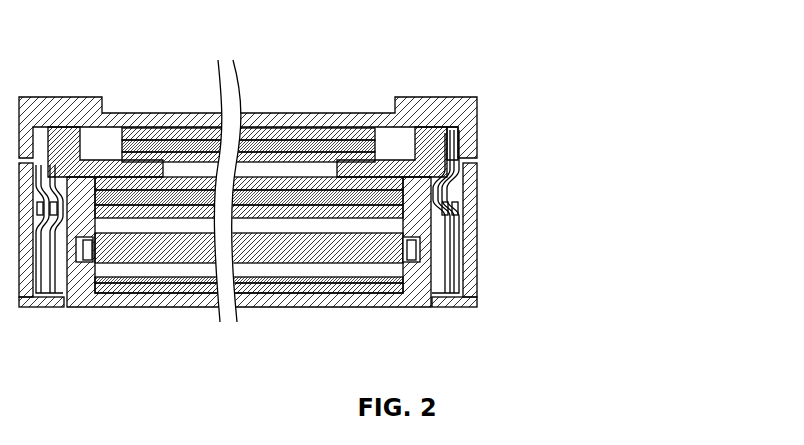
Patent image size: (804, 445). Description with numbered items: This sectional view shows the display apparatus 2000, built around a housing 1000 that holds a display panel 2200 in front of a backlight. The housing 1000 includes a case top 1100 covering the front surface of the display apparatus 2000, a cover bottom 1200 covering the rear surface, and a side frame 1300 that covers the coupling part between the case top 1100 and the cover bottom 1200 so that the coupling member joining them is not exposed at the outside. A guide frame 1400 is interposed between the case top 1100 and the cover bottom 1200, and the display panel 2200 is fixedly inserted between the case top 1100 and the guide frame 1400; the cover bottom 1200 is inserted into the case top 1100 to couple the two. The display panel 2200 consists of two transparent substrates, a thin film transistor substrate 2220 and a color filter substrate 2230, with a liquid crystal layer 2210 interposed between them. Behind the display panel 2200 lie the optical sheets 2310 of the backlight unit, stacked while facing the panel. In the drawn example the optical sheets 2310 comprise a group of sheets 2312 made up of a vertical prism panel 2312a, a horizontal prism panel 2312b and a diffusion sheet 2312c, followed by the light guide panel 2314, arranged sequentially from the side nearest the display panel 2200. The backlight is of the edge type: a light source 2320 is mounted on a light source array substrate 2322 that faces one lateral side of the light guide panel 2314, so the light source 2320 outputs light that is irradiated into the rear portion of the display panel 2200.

The display apparatus 2000 is at (378, 24).
The housing 1000 is at (716, 122).
The case top 1100 is at (463, 116).
The guide frame 1400 is at (440, 143).
The cover bottom 1200 is at (455, 275).
The side frame 1300 is at (467, 302).
The display panel 2200 is at (243, 103).
The thin film transistor substrate 2220 is at (134, 132).
The liquid crystal layer 2210 is at (185, 145).
The color filter substrate 2230 is at (222, 120).
The optical sheets 2310 is at (381, 235).
The multilayer board 2312 is at (351, 201).
The vertical prism panel 2312a is at (398, 181).
The horizontal prism panel 2312b is at (398, 195).
The diffusion sheet 2312c is at (398, 209).
The light guide panel 2314 is at (398, 248).
The light source 2320 is at (103, 300).
The light source array substrate 2322 is at (82, 262).